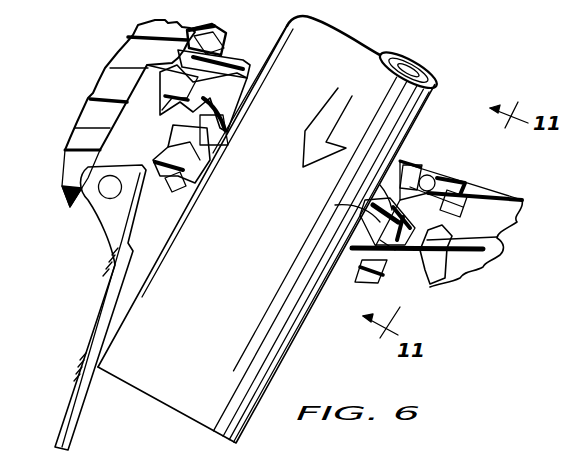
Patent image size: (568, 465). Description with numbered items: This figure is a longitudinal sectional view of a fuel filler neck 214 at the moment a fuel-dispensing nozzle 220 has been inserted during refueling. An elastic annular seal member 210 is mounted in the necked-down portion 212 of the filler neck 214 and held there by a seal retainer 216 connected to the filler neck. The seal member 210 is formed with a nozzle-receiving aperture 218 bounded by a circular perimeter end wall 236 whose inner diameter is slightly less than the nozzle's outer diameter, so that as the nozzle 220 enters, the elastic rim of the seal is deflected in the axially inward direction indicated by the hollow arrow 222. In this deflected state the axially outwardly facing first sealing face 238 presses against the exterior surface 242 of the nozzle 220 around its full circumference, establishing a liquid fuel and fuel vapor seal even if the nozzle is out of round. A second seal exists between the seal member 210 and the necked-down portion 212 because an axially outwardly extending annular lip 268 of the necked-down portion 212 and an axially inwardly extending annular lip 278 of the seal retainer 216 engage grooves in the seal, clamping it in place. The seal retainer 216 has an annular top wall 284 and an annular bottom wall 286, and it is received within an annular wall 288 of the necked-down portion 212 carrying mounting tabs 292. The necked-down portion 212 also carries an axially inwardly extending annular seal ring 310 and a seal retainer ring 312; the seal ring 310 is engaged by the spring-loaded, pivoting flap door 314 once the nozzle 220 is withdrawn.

The elastic annular seal member 210 is at (243, 126).
The necked-down portion 212 is at (430, 283).
The filler neck 214 is at (487, 240).
The seal retainer 216 is at (393, 172).
The aperture 218 is at (234, 98).
The fuel-dispensing nozzle 220 is at (430, 106).
The axially inwardly extending direction 222 is at (343, 108).
The circular perimeter end wall 236 is at (335, 205).
The first sealing face 238 is at (380, 185).
The exterior surface 242 is at (224, 356).
The annular lip 268 is at (395, 250).
The annular lip 278 is at (400, 195).
The annular top wall 284 is at (214, 36).
The annular bottom wall 286 is at (173, 78).
The annular wall 288 is at (216, 50).
The mounting tabs 292 is at (450, 176).
The annular seal ring 310 is at (178, 182).
The seal retainer ring 312 is at (163, 147).
The flap door 314 is at (85, 336).